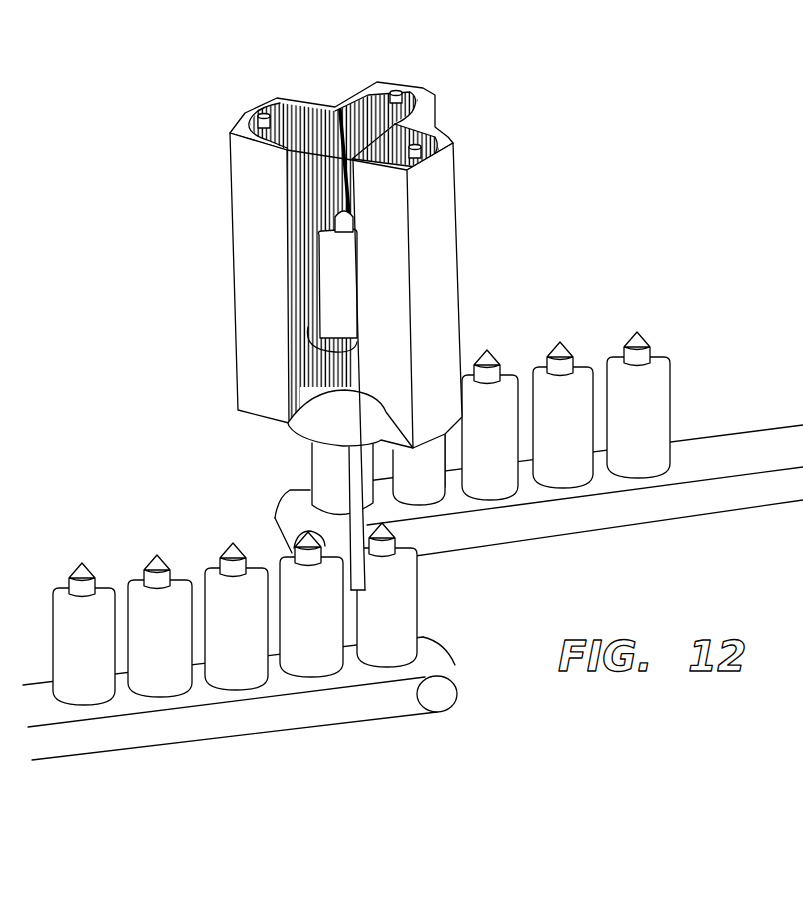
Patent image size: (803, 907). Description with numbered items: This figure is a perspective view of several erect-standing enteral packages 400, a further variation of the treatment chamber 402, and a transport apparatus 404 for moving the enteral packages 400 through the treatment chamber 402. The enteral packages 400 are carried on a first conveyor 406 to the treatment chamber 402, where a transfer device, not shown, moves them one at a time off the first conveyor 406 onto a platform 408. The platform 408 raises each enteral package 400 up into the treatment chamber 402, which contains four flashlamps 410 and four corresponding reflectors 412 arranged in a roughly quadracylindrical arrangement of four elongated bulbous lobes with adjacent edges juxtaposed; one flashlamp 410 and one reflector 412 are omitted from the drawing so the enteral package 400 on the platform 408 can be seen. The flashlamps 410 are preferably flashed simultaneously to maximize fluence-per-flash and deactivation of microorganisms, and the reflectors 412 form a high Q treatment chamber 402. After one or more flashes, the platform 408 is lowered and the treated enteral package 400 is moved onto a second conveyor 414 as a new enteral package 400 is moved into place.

The enteral package 400 is at (437, 490).
The treatment chamber 402 is at (327, 62).
The transport apparatus 404 is at (293, 428).
The first conveyor 406 is at (450, 660).
The platform 408 is at (337, 351).
The flashlamp 410 is at (262, 113).
The reflector 412 is at (275, 214).
The second conveyor 414 is at (275, 518).